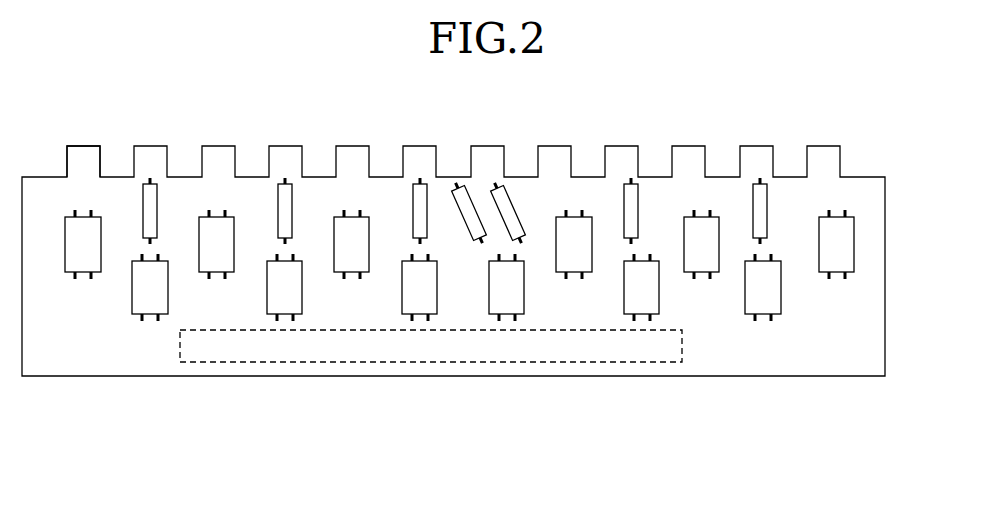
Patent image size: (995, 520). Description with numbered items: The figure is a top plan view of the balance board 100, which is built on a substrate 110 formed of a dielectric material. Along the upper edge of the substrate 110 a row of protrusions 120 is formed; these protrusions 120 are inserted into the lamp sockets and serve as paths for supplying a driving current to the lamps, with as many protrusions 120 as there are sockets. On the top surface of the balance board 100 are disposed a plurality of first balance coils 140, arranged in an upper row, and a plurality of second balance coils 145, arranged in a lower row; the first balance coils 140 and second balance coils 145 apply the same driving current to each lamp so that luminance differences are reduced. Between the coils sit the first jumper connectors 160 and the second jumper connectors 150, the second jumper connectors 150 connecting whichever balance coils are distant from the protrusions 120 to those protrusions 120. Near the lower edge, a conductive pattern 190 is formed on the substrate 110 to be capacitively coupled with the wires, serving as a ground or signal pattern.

The balance board 100 is at (334, 389).
The substrate 110 is at (851, 345).
The protrusions 120 is at (84, 153).
The first balance coils 140 is at (85, 259).
The second balance coils 145 is at (153, 295).
The second jumper connectors 150 is at (151, 197).
The first jumper connectors 160 is at (463, 197).
The conductive pattern 190 is at (228, 360).